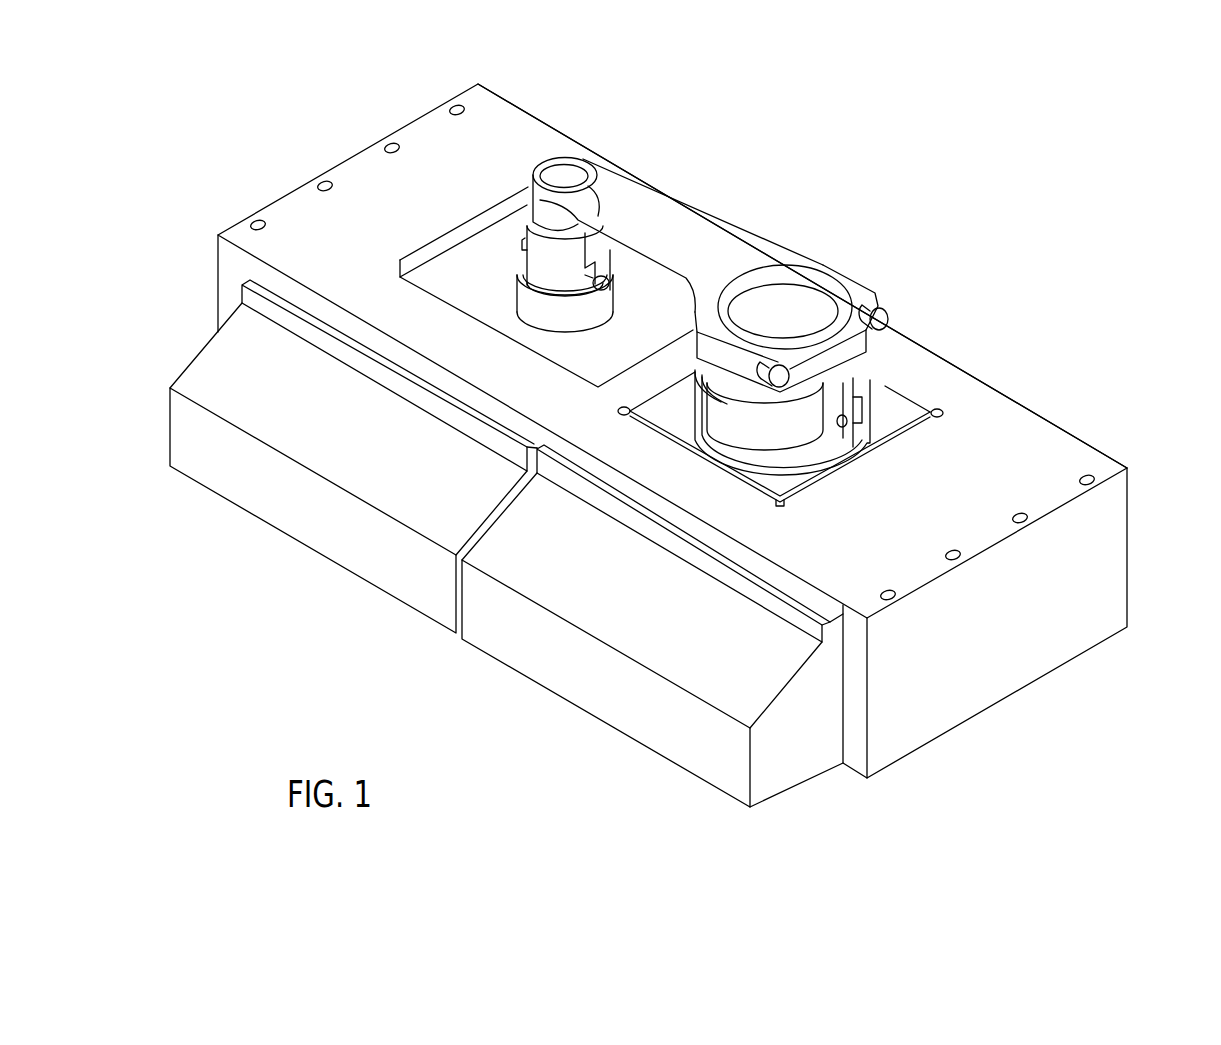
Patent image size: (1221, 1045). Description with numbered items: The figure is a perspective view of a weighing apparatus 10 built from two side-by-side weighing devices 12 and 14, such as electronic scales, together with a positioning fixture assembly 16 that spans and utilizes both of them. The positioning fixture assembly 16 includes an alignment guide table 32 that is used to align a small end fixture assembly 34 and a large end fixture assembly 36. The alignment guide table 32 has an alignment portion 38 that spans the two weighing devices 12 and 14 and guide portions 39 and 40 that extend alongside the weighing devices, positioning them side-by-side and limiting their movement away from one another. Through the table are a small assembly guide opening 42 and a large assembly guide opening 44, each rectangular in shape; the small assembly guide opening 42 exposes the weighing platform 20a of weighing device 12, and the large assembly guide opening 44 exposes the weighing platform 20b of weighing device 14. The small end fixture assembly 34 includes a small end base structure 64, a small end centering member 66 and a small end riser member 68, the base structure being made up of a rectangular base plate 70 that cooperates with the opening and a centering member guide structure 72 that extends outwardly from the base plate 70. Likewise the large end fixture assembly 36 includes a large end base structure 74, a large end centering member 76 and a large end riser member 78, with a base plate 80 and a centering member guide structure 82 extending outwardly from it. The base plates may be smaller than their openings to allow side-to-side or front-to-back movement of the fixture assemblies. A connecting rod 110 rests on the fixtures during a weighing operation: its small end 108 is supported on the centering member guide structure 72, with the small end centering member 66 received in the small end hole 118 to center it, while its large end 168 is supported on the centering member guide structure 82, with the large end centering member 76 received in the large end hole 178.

The weighing apparatus 10 is at (937, 213).
The weighing device 12 is at (275, 544).
The weighing device 14 is at (597, 740).
The positioning fixture assembly 16 is at (1042, 333).
The weighing platform 20a is at (318, 323).
The weighing platform 20b is at (662, 526).
The alignment guide table 32 is at (358, 139).
The small end fixture assembly 34 is at (571, 122).
The large end fixture assembly 36 is at (947, 328).
The alignment portion 38 is at (681, 203).
The guide portion 39 is at (218, 268).
The guide portion 40 is at (1128, 578).
The small assembly guide opening 42 is at (472, 212).
The large assembly guide opening 44 is at (893, 380).
The small end base structure 64 is at (477, 282).
The small end centering member 66 is at (590, 258).
The small end riser member 68 is at (596, 318).
The base plate 70 is at (447, 270).
The centering member guide structure 72 is at (576, 287).
The large end base structure 74 is at (678, 421).
The large end centering member 76 is at (772, 307).
The large end riser member 78 is at (845, 450).
The base plate 80 is at (899, 415).
The centering member guide structure 82 is at (790, 437).
The small end 108 is at (529, 106).
The connecting rod 110 is at (719, 196).
The small end hole 118 is at (583, 164).
The large end 168 is at (854, 267).
The large end hole 178 is at (761, 278).